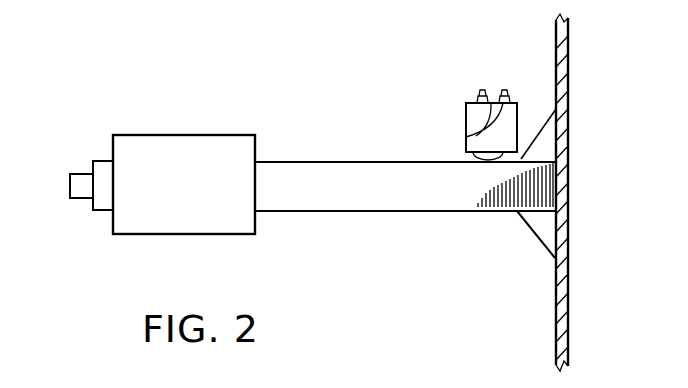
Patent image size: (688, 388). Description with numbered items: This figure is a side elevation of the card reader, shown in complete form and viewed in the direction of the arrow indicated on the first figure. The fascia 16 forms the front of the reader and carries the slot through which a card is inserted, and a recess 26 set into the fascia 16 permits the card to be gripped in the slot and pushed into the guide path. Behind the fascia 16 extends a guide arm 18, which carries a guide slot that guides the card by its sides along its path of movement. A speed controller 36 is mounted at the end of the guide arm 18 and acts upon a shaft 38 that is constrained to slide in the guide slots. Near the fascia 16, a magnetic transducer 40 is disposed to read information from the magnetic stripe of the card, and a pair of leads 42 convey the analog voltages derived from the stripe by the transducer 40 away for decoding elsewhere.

The fascia 16 is at (565, 79).
The guide arm 18 is at (329, 193).
The recess 26 is at (540, 225).
The speed controller 36 is at (193, 148).
The shaft 38 is at (80, 182).
The magnetic transducer 40 is at (466, 112).
The leads 42 is at (466, 137).